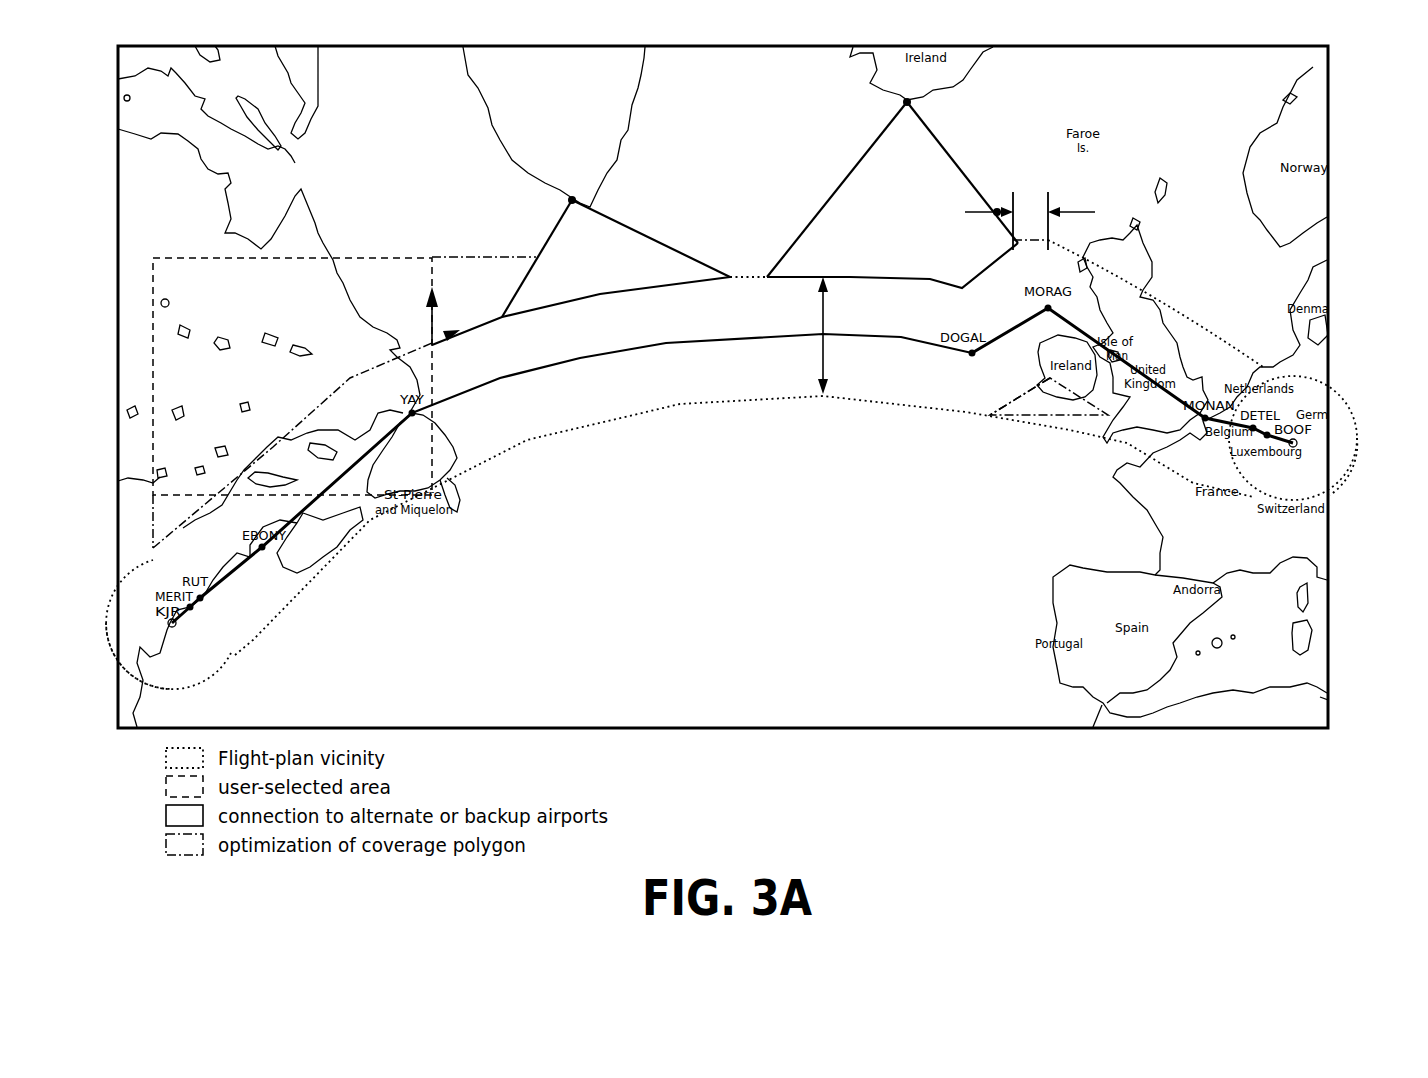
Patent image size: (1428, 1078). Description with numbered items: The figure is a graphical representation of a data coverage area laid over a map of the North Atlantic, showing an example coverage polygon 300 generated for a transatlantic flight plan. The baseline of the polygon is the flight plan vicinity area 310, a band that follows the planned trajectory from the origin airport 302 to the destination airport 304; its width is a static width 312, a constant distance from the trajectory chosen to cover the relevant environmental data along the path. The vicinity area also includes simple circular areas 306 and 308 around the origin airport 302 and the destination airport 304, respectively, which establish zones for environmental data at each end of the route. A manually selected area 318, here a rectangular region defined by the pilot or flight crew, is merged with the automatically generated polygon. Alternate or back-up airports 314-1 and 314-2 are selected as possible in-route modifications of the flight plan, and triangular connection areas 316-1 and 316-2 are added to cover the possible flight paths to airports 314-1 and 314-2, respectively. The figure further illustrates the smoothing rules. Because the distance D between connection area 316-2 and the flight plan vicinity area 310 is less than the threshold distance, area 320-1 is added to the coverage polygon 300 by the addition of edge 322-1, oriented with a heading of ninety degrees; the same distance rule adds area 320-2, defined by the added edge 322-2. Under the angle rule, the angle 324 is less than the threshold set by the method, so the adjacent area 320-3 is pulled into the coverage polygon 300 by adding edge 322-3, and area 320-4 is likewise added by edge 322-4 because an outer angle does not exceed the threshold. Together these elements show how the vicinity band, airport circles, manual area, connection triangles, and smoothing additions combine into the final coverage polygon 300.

The coverage polygon 300 is at (667, 343).
The origin airport 302 is at (1330, 433).
The destination airport 304 is at (180, 627).
The origin airport area 306 is at (1338, 455).
The destination airport area 308 is at (133, 613).
The flight plan vicinity area 310 is at (528, 423).
The static width 312 is at (823, 357).
The alternate or back-up airport 314-1 is at (575, 195).
The alternate or back-up airport 314-2 is at (900, 107).
The triangular connection area 316-1 is at (642, 260).
The triangular connection area 316-2 is at (942, 197).
The manually selected area 318 is at (207, 277).
The added area 320-1 is at (1013, 246).
The added area 320-2 is at (1022, 405).
The added area 320-3 is at (457, 283).
The added area 320-4 is at (143, 510).
The edge 322-1 is at (1025, 240).
The edge 322-2 is at (1038, 417).
The edge 322-3 is at (473, 257).
The edge 322-4 is at (153, 528).
The angle 324 is at (427, 319).